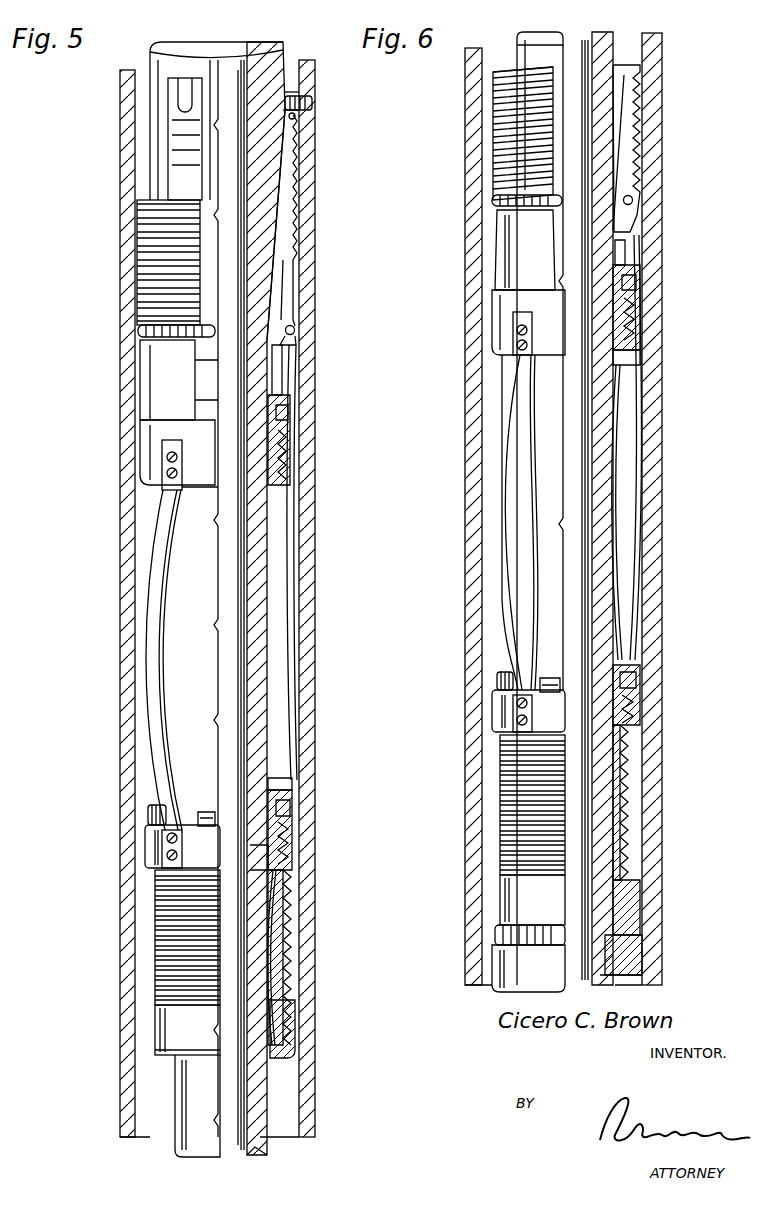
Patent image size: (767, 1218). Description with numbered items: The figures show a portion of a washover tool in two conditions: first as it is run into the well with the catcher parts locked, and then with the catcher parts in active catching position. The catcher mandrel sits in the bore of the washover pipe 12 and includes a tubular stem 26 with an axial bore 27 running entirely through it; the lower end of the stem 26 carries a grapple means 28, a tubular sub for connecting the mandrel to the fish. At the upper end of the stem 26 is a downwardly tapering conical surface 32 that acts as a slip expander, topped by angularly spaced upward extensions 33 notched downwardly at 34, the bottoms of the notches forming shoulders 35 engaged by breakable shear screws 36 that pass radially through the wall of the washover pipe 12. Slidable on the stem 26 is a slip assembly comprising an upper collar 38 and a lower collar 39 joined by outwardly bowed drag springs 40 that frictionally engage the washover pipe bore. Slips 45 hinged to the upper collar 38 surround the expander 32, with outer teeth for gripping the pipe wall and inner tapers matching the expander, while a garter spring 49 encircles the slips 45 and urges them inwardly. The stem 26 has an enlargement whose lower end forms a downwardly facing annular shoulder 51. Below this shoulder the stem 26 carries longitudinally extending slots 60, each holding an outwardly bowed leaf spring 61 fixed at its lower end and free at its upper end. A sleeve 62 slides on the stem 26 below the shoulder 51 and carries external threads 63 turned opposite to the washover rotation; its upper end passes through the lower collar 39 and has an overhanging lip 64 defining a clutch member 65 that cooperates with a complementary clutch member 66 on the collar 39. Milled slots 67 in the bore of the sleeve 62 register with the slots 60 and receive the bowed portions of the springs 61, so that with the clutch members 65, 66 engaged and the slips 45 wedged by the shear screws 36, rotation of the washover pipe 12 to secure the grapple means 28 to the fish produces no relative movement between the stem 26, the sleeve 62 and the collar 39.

In FIG. 5, the washover pipe 12 is at (306, 210).
In FIG. 6, the washover pipe 12 is at (650, 132).
In FIG. 5, the tubular stem 26 is at (262, 652).
In FIG. 6, the tubular stem 26 is at (604, 60).
In FIG. 5, the axial bore 27 is at (246, 616).
In FIG. 6, the axial bore 27 is at (590, 68).
In FIG. 5, the grapple means 28 is at (187, 1013).
In FIG. 6, the grapple means 28 is at (640, 968).
In FIG. 5, the conical surface 32 is at (289, 178).
In FIG. 5, the upward extensions 33 is at (288, 126).
In FIG. 5, the notches 34 is at (300, 92).
In FIG. 5, the shoulders 35 is at (296, 116).
In FIG. 5, the shear screws 36 is at (305, 103).
In FIG. 5, the upper collar 38 is at (145, 440).
In FIG. 6, the upper collar 38 is at (492, 335).
In FIG. 5, the lower collar 39 is at (147, 840).
In FIG. 6, the lower collar 39 is at (495, 720).
In FIG. 5, the drag springs 40 is at (297, 548).
In FIG. 6, the drag springs 40 is at (640, 537).
In FIG. 5, the slips 45 is at (290, 256).
In FIG. 6, the slips 45 is at (625, 107).
In FIG. 5, the garter spring 49 is at (296, 330).
In FIG. 6, the garter spring 49 is at (633, 200).
In FIG. 5, the annular shoulder 51 is at (270, 783).
In FIG. 6, the annular shoulder 51 is at (618, 250).
In FIG. 5, the slots 60 is at (265, 845).
In FIG. 6, the slots 60 is at (612, 372).
In FIG. 5, the leaf spring 61 is at (272, 935).
In FIG. 6, the leaf spring 61 is at (617, 435).
In FIG. 5, the sleeve 62 is at (282, 1020).
In FIG. 6, the sleeve 62 is at (613, 915).
In FIG. 5, the external threads 63 is at (285, 895).
In FIG. 6, the external threads 63 is at (620, 797).
In FIG. 5, the overhanging lip 64 is at (282, 802).
In FIG. 6, the overhanging lip 64 is at (618, 660).
In FIG. 5, the clutch member 65 is at (208, 820).
In FIG. 6, the clutch member 65 is at (547, 680).
In FIG. 5, the complementary clutch member 66 is at (150, 812).
In FIG. 6, the complementary clutch member 66 is at (497, 685).
In FIG. 5, the milled slots 67 is at (277, 825).
In FIG. 6, the milled slots 67 is at (625, 645).